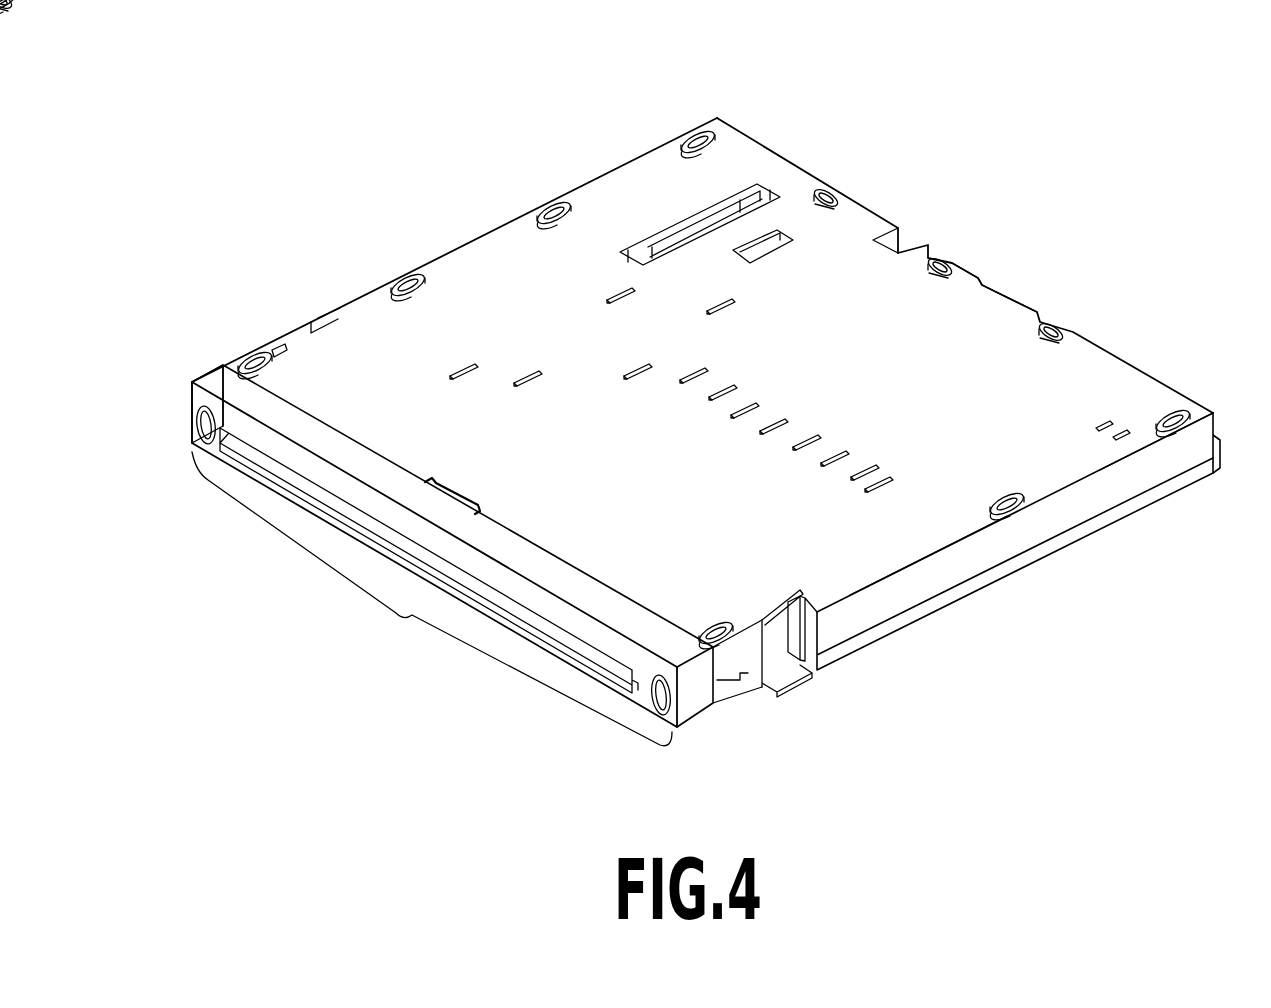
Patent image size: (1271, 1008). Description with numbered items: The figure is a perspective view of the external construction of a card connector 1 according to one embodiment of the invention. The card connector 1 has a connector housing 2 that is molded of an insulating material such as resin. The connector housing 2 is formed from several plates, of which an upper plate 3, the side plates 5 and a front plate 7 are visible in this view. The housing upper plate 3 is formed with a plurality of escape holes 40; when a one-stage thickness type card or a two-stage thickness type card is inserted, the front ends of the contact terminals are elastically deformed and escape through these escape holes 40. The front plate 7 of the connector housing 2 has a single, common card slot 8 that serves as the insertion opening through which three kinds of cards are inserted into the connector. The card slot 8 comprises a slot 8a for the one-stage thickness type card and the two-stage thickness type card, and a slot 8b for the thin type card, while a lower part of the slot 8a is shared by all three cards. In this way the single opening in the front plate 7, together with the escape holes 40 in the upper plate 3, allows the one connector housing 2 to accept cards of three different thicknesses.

The card connector 1 is at (487, 218).
The connector housing 2 is at (886, 530).
The upper plate 3 is at (1000, 318).
The side plates 5 is at (1165, 468).
The front plate 7 is at (232, 412).
The card slot 8 is at (386, 527).
The slot 8a is at (470, 572).
The slot 8b is at (432, 599).
The escape holes 40 is at (683, 372).